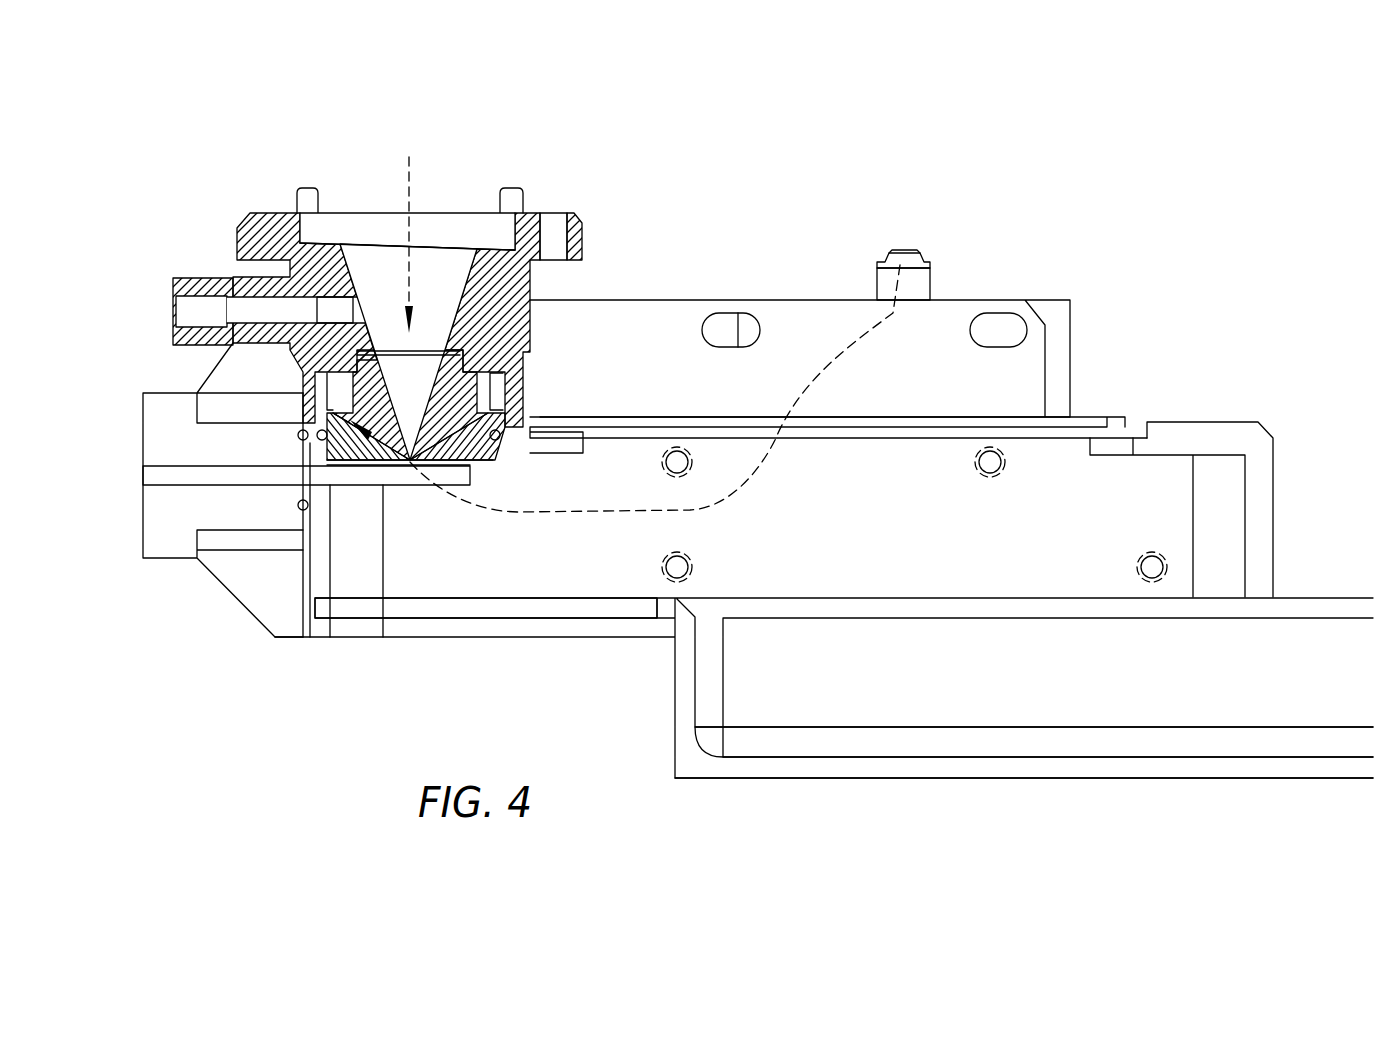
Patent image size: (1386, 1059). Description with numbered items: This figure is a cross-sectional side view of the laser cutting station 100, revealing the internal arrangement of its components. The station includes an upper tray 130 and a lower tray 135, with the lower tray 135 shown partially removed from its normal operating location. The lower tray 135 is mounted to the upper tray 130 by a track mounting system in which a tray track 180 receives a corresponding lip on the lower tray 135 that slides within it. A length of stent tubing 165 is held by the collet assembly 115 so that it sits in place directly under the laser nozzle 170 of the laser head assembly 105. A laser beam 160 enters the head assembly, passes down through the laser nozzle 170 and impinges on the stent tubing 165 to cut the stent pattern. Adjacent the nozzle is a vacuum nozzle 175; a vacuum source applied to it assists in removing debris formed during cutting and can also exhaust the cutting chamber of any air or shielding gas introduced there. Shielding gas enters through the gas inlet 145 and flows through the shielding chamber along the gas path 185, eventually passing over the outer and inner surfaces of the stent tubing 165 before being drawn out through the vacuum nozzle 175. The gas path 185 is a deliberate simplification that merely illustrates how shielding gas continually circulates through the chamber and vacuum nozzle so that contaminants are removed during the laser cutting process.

The laser cutting station 100 is at (792, 138).
The laser head assembly 105 is at (583, 243).
The collet assembly 115 is at (173, 553).
The upper tray 130 is at (1082, 420).
The lower tray 135 is at (835, 776).
The gas inlet 145 is at (900, 252).
The laser beam 160 is at (409, 181).
The stent tubing 165 is at (153, 485).
The laser nozzle 170 is at (450, 380).
The vacuum nozzle 175 is at (352, 448).
The tray track 180 is at (472, 607).
The gas path 185 is at (832, 367).